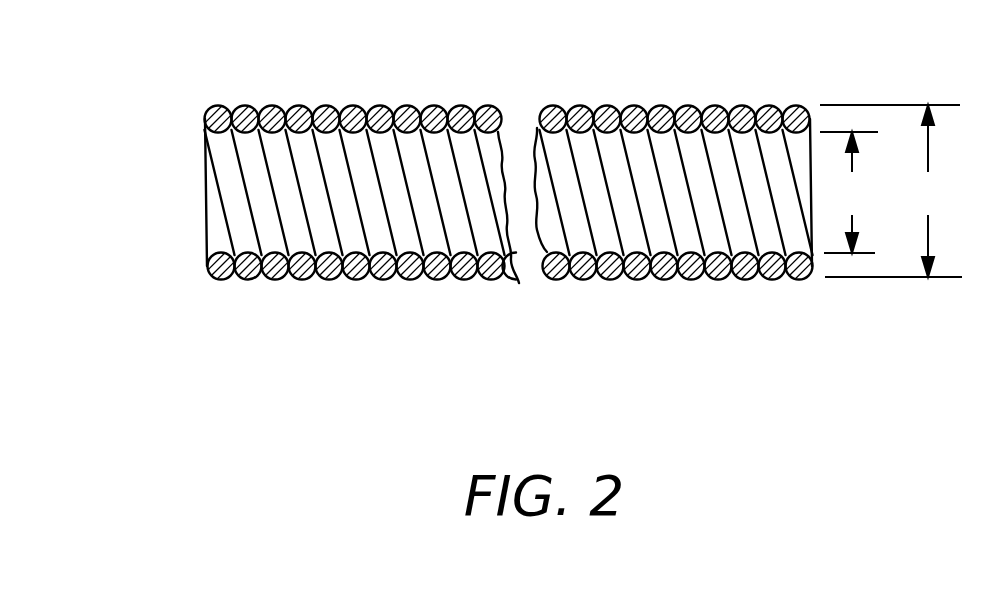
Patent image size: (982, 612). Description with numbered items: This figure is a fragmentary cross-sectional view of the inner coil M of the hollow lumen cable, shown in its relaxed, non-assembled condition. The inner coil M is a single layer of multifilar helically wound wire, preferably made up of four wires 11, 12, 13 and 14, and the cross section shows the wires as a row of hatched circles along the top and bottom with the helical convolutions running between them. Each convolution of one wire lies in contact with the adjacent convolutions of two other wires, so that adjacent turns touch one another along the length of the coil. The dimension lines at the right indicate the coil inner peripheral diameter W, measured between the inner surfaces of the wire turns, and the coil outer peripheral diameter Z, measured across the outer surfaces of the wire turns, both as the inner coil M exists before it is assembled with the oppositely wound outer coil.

The wire 11 is at (252, 282).
The wire 12 is at (272, 281).
The wire 13 is at (272, 108).
The wire 14 is at (328, 281).
The inner coil M is at (458, 107).
The coil inner peripheral diameter W is at (849, 192).
The coil outer peripheral diameter Z is at (891, 191).